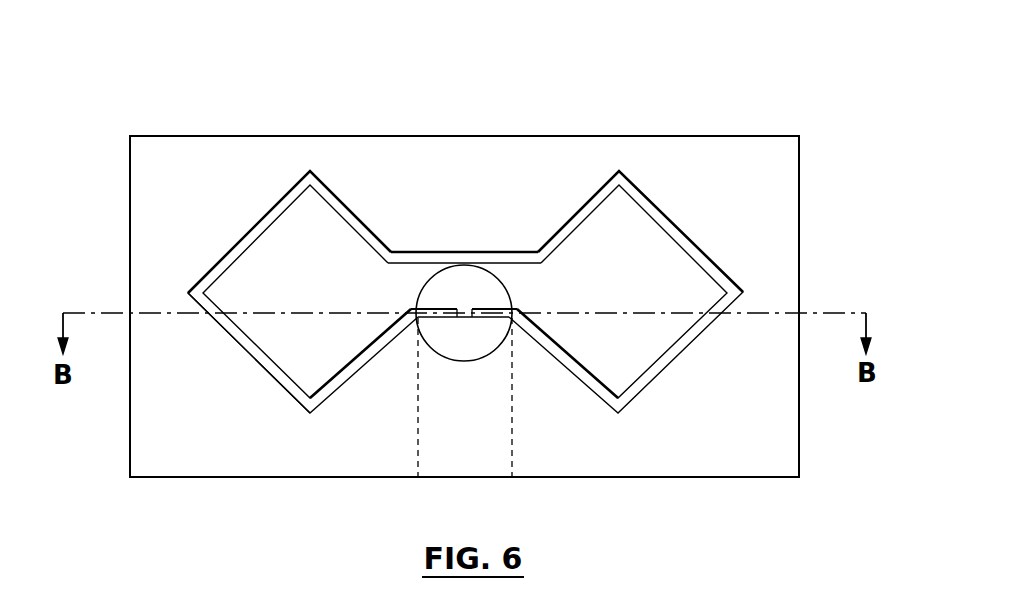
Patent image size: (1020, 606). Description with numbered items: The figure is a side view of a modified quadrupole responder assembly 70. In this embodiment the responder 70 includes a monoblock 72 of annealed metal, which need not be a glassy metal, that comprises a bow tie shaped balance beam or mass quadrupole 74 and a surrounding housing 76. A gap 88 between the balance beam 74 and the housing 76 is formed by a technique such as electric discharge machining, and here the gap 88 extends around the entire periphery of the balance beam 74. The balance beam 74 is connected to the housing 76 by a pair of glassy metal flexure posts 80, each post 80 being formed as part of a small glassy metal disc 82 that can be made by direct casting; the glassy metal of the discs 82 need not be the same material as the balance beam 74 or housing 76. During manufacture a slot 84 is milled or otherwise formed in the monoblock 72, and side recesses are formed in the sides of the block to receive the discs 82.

The quadrupole responder assembly 70 is at (726, 104).
The monoblock 72 is at (770, 207).
The balance beam 74 is at (273, 257).
The housing 76 is at (237, 136).
The flexure post 80 is at (462, 318).
The glassy metal disc 82 is at (460, 283).
The slot 84 is at (450, 457).
The gap 88 is at (255, 358).